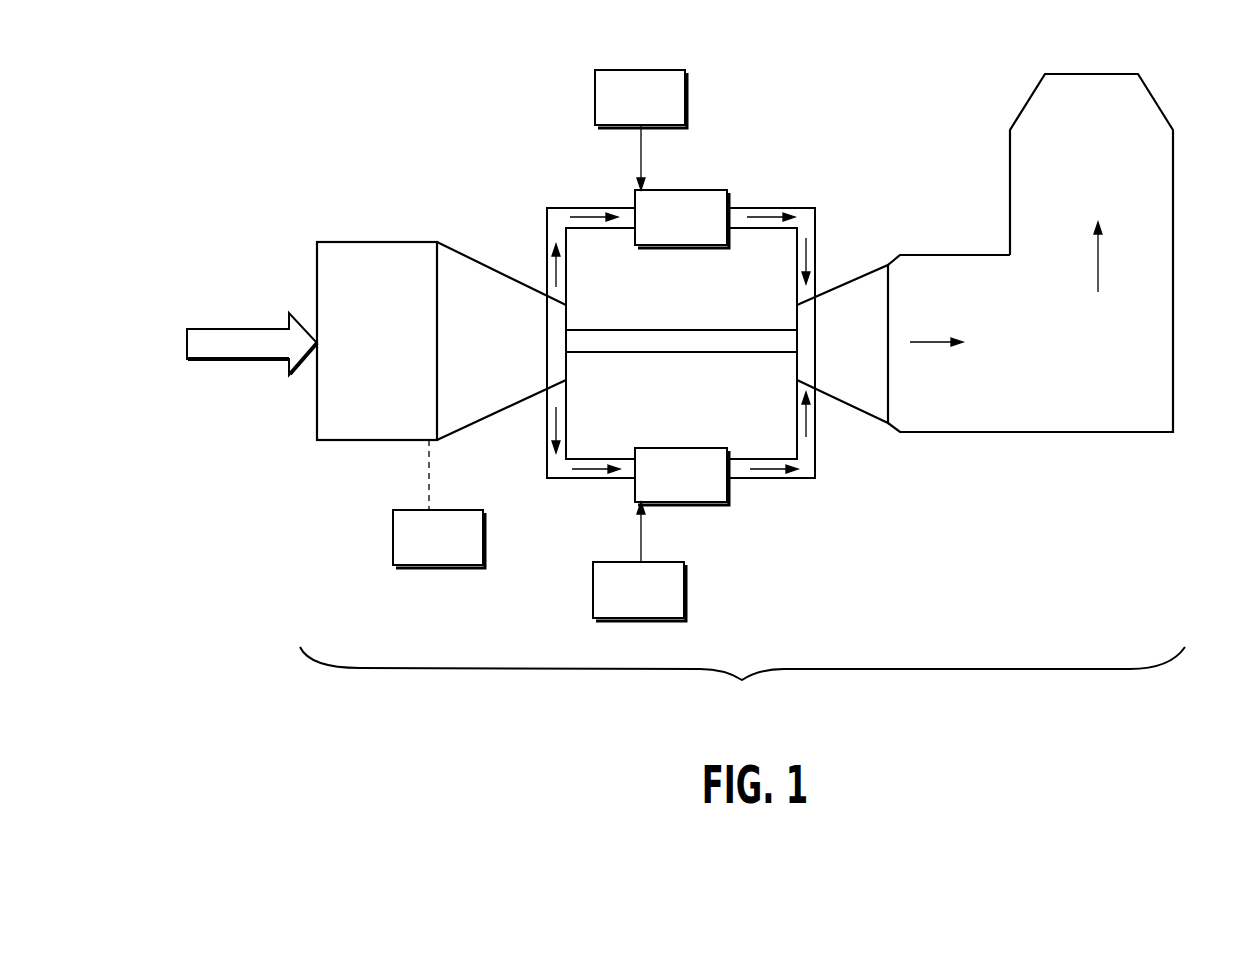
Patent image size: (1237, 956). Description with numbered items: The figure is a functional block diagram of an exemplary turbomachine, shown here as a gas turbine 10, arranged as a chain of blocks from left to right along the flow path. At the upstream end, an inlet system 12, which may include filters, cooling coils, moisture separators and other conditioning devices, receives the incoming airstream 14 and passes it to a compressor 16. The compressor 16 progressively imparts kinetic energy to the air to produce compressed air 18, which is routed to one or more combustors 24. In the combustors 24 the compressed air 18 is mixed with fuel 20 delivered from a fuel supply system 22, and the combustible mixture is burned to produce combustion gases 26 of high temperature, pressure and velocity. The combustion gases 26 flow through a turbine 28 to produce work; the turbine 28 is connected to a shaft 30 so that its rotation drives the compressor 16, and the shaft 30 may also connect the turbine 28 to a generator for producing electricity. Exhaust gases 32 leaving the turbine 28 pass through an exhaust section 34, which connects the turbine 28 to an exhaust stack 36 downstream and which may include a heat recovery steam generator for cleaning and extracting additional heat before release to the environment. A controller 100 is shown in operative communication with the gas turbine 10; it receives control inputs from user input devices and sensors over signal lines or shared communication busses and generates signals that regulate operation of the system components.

The gas turbine 10 is at (730, 721).
The inlet system 12 is at (371, 361).
The airstream 14 is at (240, 352).
The compressor 16 is at (471, 361).
The compressed air 18 is at (550, 278).
The fuel 20 is at (643, 140).
The fuel supply system 22 is at (628, 114).
The combustor 24 is at (669, 234).
The combustion gases 26 is at (808, 250).
The turbine 28 is at (839, 358).
The shaft 30 is at (677, 352).
The exhaust gases 32 is at (1100, 268).
The exhaust section 34 is at (1081, 358).
The exhaust stack 36 is at (1175, 172).
The controller 100 is at (420, 554).